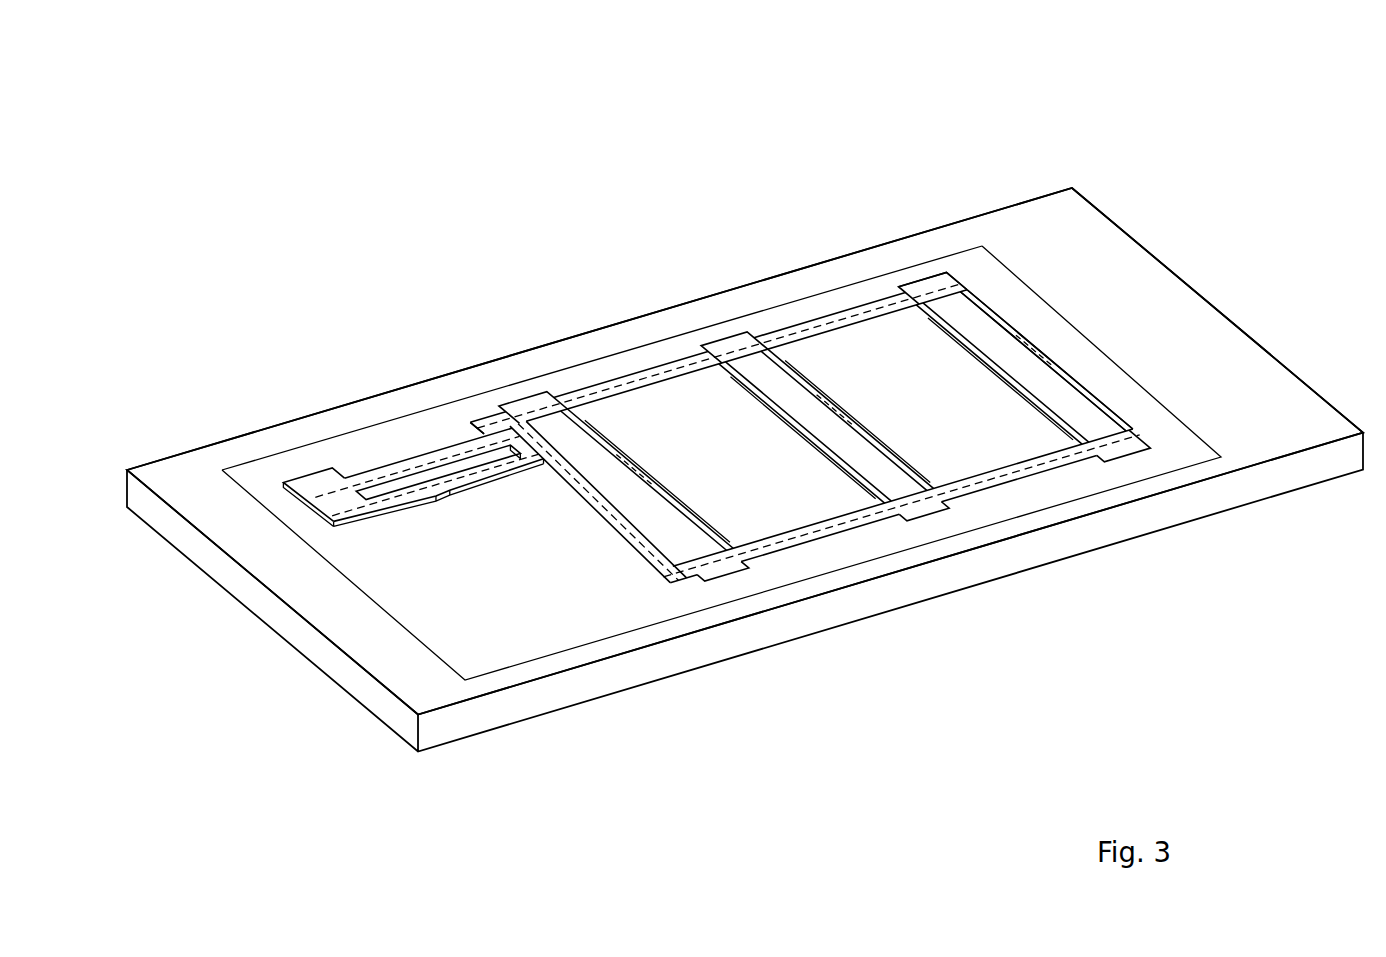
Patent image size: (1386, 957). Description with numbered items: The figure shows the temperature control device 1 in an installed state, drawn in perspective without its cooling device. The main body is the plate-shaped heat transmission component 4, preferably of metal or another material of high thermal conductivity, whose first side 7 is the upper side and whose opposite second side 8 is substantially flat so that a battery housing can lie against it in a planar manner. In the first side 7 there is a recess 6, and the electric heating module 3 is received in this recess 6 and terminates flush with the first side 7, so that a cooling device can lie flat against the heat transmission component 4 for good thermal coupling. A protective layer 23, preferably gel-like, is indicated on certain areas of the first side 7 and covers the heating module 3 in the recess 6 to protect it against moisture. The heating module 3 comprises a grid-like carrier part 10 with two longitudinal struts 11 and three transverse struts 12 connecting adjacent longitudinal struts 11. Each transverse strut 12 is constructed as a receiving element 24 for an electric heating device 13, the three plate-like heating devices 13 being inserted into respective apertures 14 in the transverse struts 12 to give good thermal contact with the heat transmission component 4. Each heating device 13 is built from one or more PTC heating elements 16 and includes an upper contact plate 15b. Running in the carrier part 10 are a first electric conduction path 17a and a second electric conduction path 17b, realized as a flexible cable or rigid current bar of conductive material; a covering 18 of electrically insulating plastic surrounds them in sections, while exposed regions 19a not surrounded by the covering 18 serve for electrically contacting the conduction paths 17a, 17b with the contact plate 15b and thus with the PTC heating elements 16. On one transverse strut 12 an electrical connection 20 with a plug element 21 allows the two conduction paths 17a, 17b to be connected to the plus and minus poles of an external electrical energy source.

The temperature control device 1 is at (1289, 185).
The electric heating module 3 is at (1112, 400).
The heat transmission component 4 is at (1255, 340).
The recess 6 is at (935, 285).
The first side 7 is at (1212, 328).
The second side 8 is at (1248, 508).
The carrier part 10 is at (828, 308).
The longitudinal struts 11 is at (655, 368).
The transverse struts 12 is at (610, 518).
The electric heating device 13 is at (640, 470).
The apertures 14 is at (655, 515).
The upper contact plate 15b is at (682, 540).
The PTC heating element 16 is at (600, 470).
The first electric conduction path 17a is at (430, 436).
The second electric conduction path 17b is at (462, 490).
The covering 18 is at (505, 430).
The exposed region 19a is at (530, 400).
The electrical connection 20 is at (303, 480).
The plug element 21 is at (315, 500).
The protective layer 23 is at (595, 355).
The receiving element 24 is at (815, 444).